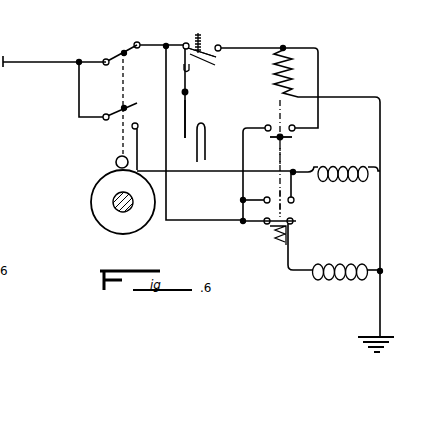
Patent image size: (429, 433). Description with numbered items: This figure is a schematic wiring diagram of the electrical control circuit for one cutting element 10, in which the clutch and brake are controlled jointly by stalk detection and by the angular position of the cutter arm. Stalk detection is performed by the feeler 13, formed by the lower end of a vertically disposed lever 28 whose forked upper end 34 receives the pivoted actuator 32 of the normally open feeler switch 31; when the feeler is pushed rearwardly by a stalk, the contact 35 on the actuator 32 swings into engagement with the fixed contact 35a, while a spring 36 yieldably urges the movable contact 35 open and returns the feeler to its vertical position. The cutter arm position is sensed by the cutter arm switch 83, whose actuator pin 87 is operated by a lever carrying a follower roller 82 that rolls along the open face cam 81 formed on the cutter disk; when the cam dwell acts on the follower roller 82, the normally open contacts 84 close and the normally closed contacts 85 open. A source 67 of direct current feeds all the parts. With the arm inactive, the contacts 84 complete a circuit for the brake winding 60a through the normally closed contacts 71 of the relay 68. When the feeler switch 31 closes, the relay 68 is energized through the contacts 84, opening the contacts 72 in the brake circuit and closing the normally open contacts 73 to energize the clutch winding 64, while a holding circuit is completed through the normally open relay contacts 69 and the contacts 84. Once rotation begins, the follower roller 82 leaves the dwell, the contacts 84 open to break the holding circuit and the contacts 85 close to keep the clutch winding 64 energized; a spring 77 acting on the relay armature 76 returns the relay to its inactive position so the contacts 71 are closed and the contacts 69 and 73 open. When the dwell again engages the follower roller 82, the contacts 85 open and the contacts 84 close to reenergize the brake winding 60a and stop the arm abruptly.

The source of direct current 67 is at (54, 48).
The cutter arm switch 83 is at (121, 49).
The normally open contacts 84 is at (162, 57).
The actuator pin 87 is at (121, 90).
The normally closed contacts 85 is at (142, 120).
The lever 28 is at (185, 82).
The spring 36 is at (192, 45).
The feeler switch 31 is at (228, 37).
The pivoted actuator 32 is at (191, 68).
The forked upper end 34 is at (193, 76).
The contact 35 is at (214, 56).
The fixed contact 35a is at (276, 57).
The relay 68 is at (292, 57).
The normally open relay contacts 69 is at (274, 121).
The feeler 13 is at (187, 110).
The control element 10 is at (207, 138).
The relay armature 76 is at (285, 153).
The clutch winding 64 is at (346, 167).
The normally open contacts 73 is at (274, 190).
The contacts 72 is at (258, 211).
The normally closed contacts 71 is at (268, 233).
The spring 77 is at (291, 247).
The brake winding 60a is at (345, 280).
The follower roller 82 is at (117, 158).
The open face cam 81 is at (137, 229).